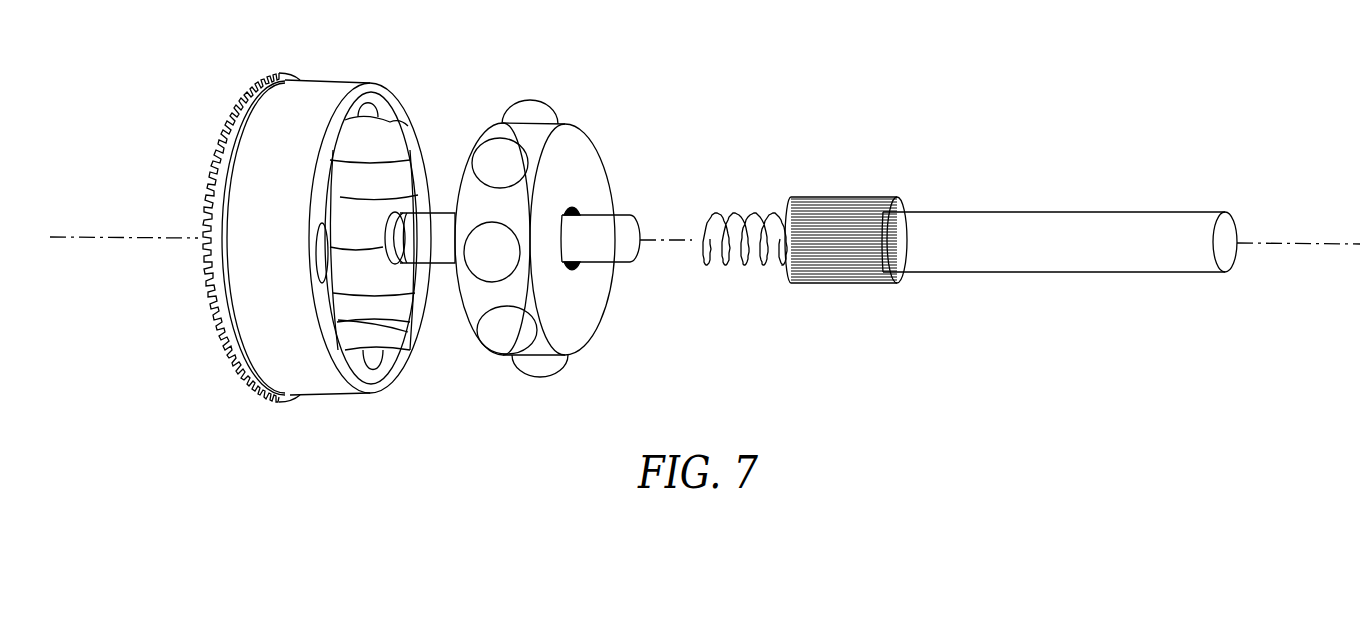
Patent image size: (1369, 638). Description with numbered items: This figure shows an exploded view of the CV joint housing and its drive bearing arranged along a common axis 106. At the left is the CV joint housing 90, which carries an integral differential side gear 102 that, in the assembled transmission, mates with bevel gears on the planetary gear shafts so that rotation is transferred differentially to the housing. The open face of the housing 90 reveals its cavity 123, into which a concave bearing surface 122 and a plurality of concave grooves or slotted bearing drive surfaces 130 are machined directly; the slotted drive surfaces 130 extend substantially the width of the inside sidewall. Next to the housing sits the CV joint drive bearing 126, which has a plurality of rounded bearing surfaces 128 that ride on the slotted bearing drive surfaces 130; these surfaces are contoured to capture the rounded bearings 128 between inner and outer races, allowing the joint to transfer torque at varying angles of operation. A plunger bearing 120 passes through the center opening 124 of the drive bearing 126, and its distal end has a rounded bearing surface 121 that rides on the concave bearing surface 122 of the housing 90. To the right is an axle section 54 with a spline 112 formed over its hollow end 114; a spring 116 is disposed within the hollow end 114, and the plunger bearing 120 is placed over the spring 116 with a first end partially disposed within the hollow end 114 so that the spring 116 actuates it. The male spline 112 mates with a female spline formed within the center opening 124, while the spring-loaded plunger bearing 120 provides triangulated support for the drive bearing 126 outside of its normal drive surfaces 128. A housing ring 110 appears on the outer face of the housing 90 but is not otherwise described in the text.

The axle section 54 is at (1045, 225).
The CV joint housing 90 is at (344, 78).
The differential side gear 102 is at (213, 168).
The axis 106 is at (1298, 243).
The housing ring 110 is at (320, 96).
The spline 112 is at (843, 207).
The hollow end 114 is at (790, 263).
The spring 116 is at (743, 220).
The plunger bearing 120 is at (438, 228).
The rounded bearing surface 121 is at (393, 223).
The concave bearing surface 122 is at (323, 250).
The cavity 123 is at (338, 320).
The center opening 124 is at (577, 272).
The CV joint drive bearing 126 is at (588, 157).
The rounded bearing surfaces 128 is at (530, 104).
The slotted bearing drive surfaces 130 is at (402, 140).